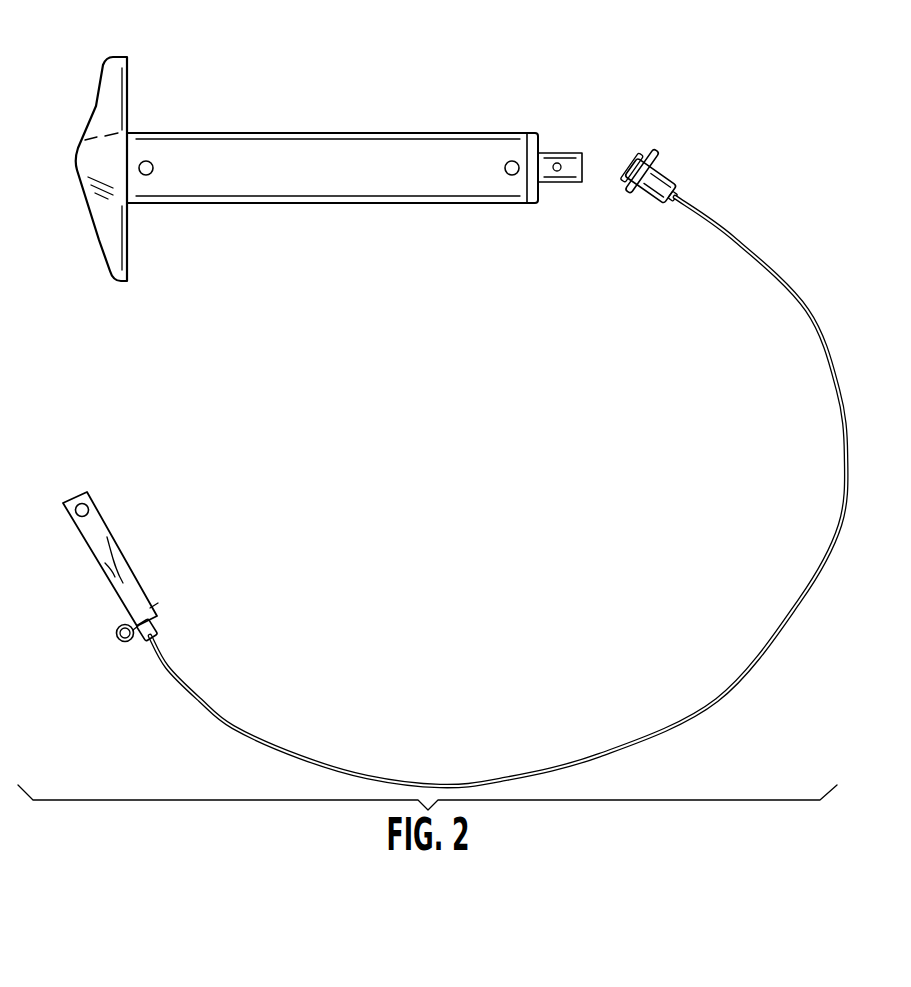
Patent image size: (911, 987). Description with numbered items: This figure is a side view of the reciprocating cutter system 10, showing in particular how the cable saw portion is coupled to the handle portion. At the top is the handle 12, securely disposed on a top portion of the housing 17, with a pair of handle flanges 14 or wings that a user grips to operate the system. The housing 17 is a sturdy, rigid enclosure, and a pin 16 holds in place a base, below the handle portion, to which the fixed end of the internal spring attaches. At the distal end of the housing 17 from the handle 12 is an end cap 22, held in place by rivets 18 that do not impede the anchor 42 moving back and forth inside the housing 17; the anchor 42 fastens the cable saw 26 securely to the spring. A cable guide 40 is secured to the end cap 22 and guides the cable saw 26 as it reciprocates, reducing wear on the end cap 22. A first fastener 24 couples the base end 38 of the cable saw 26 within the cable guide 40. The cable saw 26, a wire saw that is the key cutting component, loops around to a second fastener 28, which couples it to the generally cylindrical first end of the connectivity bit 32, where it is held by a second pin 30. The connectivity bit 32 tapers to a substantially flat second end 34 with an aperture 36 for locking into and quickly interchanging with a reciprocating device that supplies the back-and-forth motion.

The reciprocating cutter system 10 is at (755, 99).
The handle 12 is at (100, 170).
The handle flanges 14 is at (107, 108).
The pin 16 is at (153, 161).
The housing 17 is at (306, 154).
The rivets 18 is at (510, 161).
The end cap 22 is at (532, 189).
The first fastener 24 is at (676, 191).
The cable saw 26 is at (808, 313).
The second fastener 28 is at (160, 632).
The second pin 30 is at (118, 638).
The connectivity bit 32 is at (136, 600).
The second end 34 is at (106, 551).
The aperture 36 is at (87, 503).
The base end 38 is at (650, 182).
The cable guide 40 is at (580, 160).
The anchor 42 is at (558, 163).